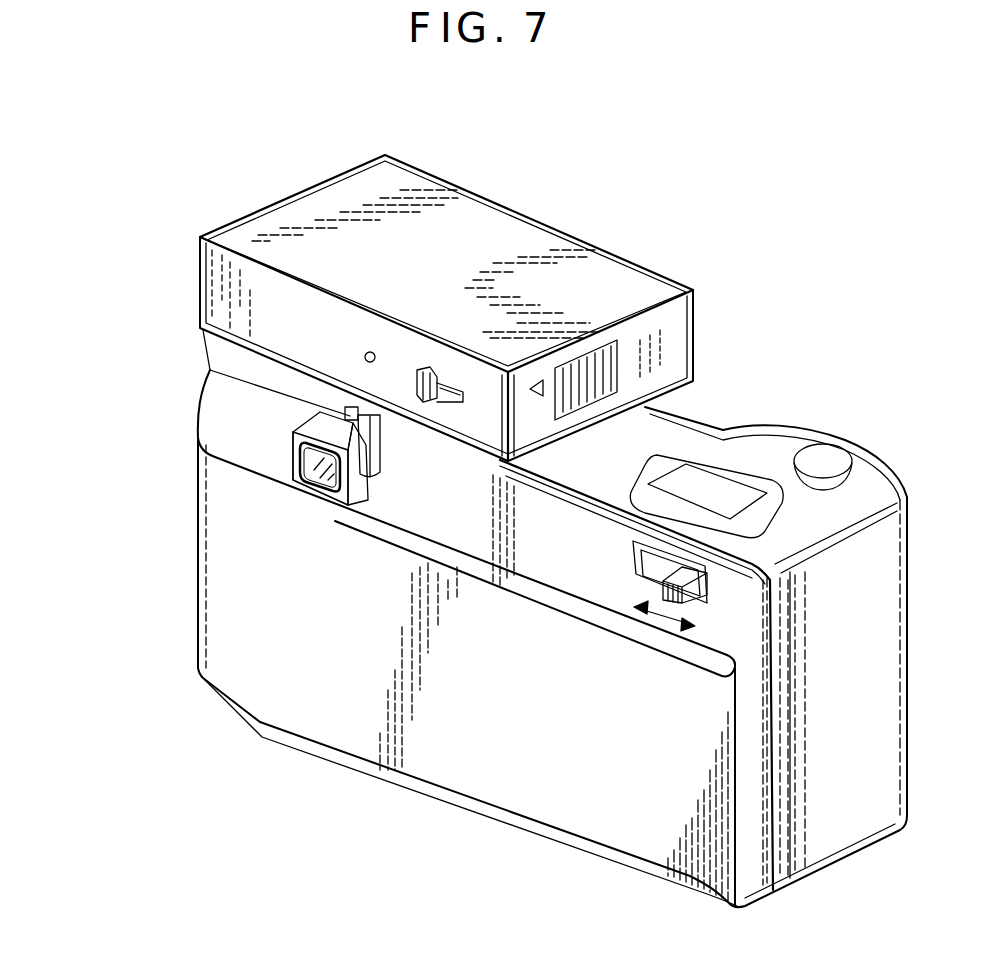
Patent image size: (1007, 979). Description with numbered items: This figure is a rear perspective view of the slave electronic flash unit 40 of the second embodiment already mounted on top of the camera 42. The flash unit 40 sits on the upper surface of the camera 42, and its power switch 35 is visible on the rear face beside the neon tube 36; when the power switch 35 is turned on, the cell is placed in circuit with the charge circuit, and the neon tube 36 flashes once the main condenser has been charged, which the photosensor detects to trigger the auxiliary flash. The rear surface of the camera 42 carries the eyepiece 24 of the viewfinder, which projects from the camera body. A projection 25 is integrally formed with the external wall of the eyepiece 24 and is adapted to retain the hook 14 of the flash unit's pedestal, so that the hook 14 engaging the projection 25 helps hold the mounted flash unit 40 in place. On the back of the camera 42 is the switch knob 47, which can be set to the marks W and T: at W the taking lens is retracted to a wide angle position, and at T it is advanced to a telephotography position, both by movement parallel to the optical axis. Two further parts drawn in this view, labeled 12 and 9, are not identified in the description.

The slave electronic flash unit 40 is at (538, 198).
The flash mounting base 12 is at (260, 372).
The neon tube 36 is at (370, 351).
The power switch 35 is at (420, 370).
The projection 25 is at (352, 407).
The hook 14 is at (385, 463).
The eyepiece 24 is at (330, 507).
The camera 42 is at (183, 581).
The shutter release button 9 is at (822, 461).
The switch knob 47 is at (684, 575).